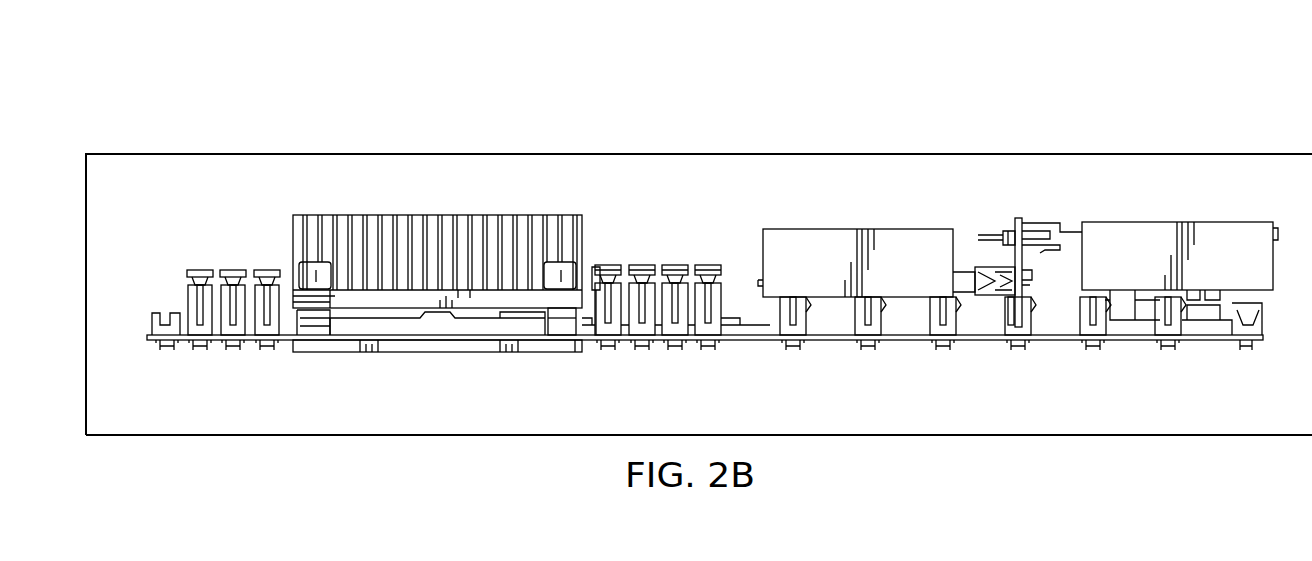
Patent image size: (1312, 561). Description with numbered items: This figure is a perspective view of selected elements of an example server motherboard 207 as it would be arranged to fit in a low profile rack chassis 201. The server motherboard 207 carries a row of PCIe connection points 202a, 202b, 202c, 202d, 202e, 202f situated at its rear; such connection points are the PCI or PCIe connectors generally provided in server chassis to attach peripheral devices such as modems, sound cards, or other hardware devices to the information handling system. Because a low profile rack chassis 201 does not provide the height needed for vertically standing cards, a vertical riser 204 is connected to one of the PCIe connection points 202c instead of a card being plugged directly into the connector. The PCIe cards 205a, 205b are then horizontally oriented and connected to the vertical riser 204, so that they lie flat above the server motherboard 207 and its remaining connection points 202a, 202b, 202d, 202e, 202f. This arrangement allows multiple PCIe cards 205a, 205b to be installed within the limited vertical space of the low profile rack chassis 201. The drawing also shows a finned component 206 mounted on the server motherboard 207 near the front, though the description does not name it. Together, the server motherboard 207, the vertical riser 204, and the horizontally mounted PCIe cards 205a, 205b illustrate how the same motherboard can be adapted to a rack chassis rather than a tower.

The low profile rack chassis 201 is at (324, 79).
The PCIe connection point 202a is at (1147, 340).
The PCIe connection point 202b is at (1072, 340).
The PCIe connection point 202c is at (995, 340).
The PCIe connection point 202d is at (920, 340).
The PCIe connection point 202e is at (845, 340).
The PCIe connection point 202f is at (770, 340).
The vertical riser 204 is at (1018, 218).
The PCIe card 205a is at (1243, 230).
The PCIe card 205b is at (810, 248).
The heat sink 206 is at (428, 215).
The server motherboard 207 is at (743, 343).